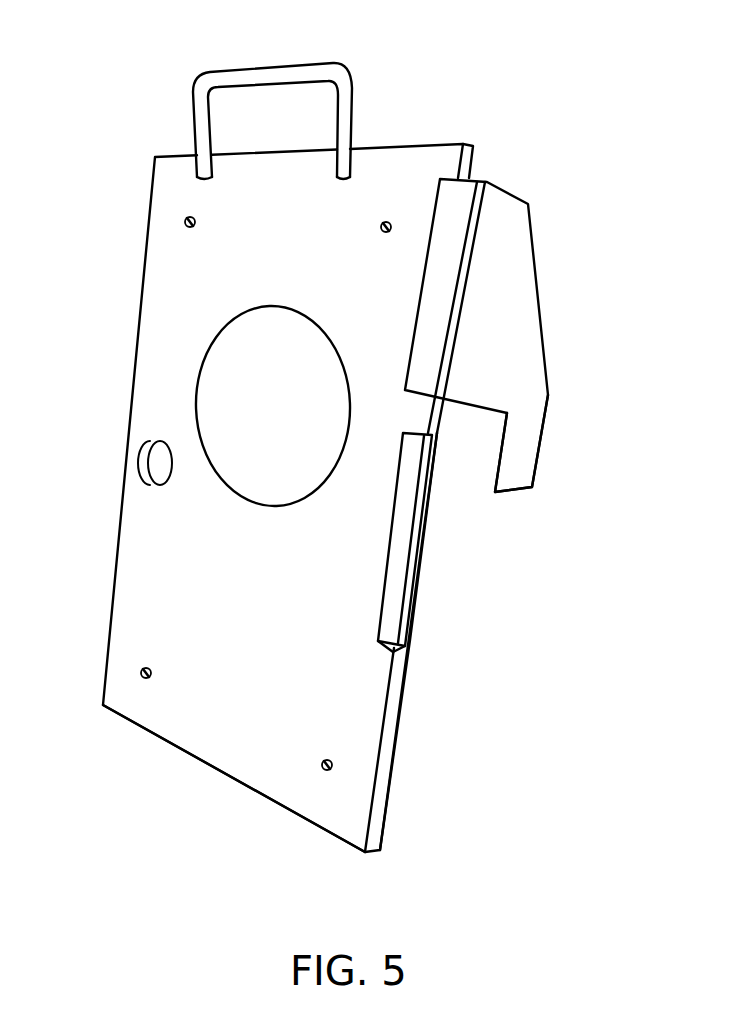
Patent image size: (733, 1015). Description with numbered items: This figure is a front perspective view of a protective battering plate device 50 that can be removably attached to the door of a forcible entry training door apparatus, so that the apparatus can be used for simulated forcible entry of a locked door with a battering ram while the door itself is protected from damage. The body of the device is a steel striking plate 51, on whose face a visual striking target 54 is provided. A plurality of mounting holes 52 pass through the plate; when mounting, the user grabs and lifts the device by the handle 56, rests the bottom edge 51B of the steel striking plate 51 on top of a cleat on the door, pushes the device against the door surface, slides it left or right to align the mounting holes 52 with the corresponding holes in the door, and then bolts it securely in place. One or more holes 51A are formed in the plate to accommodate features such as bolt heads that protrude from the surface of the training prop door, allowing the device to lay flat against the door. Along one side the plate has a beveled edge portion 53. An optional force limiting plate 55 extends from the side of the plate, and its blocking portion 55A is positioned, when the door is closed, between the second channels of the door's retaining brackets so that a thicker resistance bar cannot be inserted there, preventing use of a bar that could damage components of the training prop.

The protective battering plate device 50 is at (90, 101).
The steel striking plate 51 is at (160, 272).
The holes 51A is at (153, 462).
The bottom edge 51B is at (205, 763).
The mounting holes 52 is at (195, 224).
The beveled edge portion 53 is at (410, 543).
The visual striking target 54 is at (230, 403).
The force limiting plate 55 is at (515, 260).
The blocking portion 55A is at (528, 442).
The handle 56 is at (340, 72).